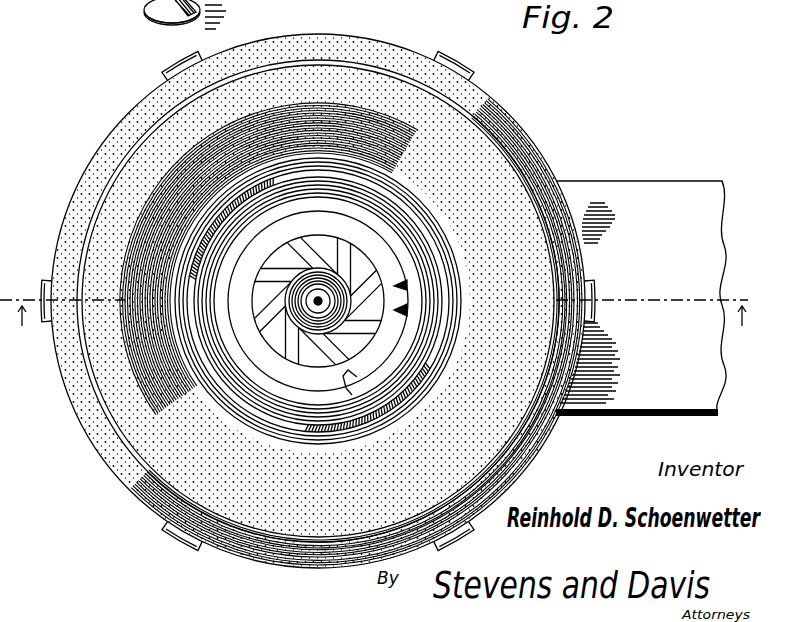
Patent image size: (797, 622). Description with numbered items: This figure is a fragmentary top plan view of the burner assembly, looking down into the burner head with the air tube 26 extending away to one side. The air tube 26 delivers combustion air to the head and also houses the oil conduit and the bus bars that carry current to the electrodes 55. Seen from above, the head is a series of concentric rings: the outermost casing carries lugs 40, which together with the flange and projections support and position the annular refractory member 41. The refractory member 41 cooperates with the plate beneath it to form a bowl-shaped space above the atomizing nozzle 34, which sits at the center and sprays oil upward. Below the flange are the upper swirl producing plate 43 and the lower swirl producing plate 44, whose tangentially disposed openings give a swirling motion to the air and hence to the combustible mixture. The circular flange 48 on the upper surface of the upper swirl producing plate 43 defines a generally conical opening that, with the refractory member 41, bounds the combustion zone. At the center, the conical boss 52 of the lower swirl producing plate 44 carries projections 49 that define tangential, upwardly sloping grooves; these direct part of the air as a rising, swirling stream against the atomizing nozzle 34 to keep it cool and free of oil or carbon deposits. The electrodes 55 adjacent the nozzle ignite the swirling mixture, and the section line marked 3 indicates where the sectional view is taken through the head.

The section line 3- 3 is at (374, 304).
The air tube 26 is at (698, 190).
The atomizing nozzle 34 is at (370, 352).
The lugs 40 is at (453, 63).
The annular refractory member 41 is at (500, 167).
The upper swirl producing plate 43 is at (332, 430).
The lower swirl producing plate 44 is at (357, 377).
The circular flange 48 is at (292, 410).
The projections 49 is at (262, 297).
The conical boss 52 is at (338, 249).
The electrodes 55 is at (404, 298).